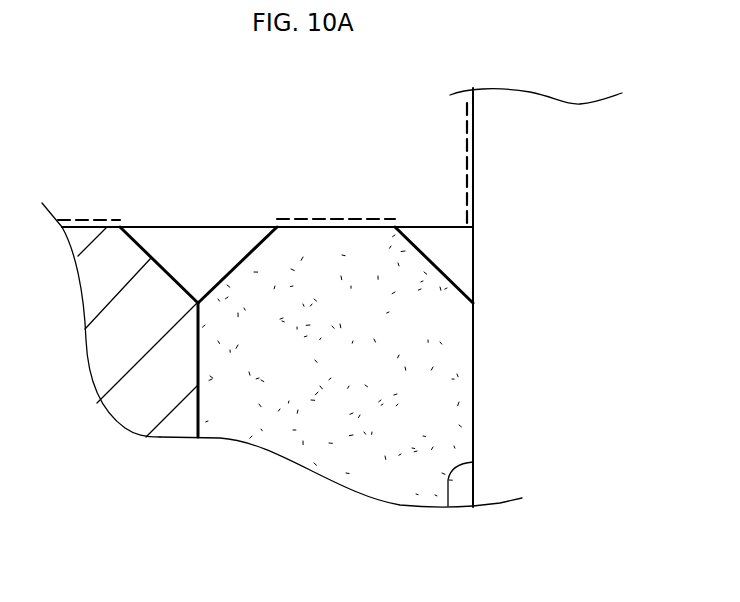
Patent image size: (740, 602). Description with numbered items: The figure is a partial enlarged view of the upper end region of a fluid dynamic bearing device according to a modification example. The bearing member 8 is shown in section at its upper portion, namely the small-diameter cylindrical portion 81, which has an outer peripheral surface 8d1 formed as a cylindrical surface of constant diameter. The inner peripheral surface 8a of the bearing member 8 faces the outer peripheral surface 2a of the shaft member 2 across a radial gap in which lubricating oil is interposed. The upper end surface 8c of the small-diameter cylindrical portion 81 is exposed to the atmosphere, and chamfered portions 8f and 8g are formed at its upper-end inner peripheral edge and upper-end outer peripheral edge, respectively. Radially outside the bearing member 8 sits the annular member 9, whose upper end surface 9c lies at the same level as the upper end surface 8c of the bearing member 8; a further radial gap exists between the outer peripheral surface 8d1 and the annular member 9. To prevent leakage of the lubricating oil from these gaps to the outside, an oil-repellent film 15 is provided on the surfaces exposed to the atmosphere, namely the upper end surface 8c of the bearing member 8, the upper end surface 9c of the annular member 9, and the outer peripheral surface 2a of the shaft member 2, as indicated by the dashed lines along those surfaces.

The shaft member 2 is at (572, 176).
The outer peripheral surface of the shaft member 2a is at (448, 506).
The bearing member 8 is at (343, 432).
The small-diameter cylindrical portion 81 is at (263, 412).
The inner peripheral surface of the bearing member 8a is at (473, 402).
The upper end surface of the bearing member 8c is at (358, 227).
The chamfered portion 8f is at (430, 259).
The chamfered portion 8g is at (252, 250).
The outer peripheral surface of the small-diameter cylindrical portion 8d1 is at (195, 413).
The annular member 9 is at (113, 358).
The upper end surface of the annular member 9c is at (90, 227).
The oil-repellent film 15 is at (78, 220).